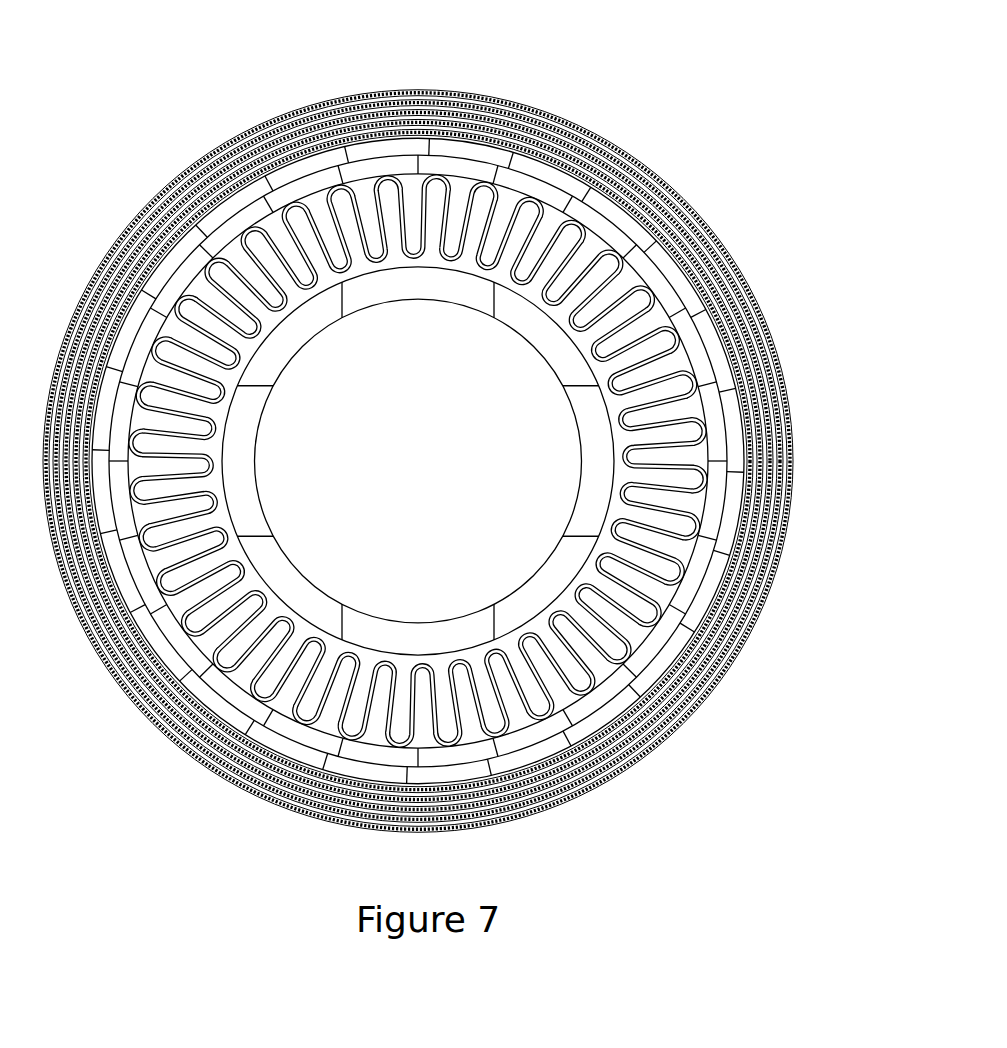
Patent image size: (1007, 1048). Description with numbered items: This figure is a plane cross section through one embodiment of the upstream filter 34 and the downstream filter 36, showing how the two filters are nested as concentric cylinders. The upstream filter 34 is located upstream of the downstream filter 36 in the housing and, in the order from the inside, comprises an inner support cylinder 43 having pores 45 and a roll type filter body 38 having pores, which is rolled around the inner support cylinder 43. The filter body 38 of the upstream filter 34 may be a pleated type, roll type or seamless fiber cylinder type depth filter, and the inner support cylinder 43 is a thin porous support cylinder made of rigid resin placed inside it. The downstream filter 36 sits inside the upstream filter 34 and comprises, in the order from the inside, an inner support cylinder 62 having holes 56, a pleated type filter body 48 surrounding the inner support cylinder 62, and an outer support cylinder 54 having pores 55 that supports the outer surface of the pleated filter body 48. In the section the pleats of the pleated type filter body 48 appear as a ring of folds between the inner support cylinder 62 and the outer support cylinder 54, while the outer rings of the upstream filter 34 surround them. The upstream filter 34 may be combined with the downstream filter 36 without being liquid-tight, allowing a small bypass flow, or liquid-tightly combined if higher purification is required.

The upstream filter 34 is at (668, 120).
The downstream filter 36 is at (534, 368).
The filter body 38 is at (748, 284).
The inner support cylinder 43 is at (520, 755).
The pores 45 is at (664, 685).
The pleated type filter body 48 is at (438, 226).
The outer support cylinder 54 is at (680, 613).
The pores 55 is at (733, 457).
The holes 56 is at (331, 624).
The inner support cylinder 62 is at (243, 461).